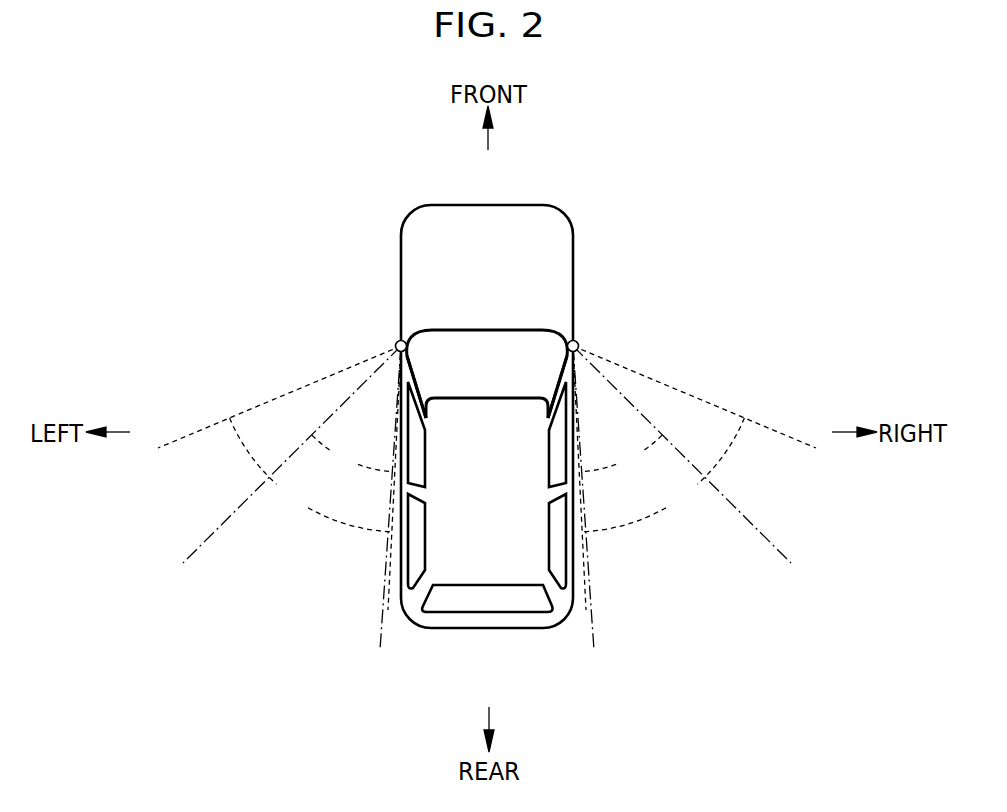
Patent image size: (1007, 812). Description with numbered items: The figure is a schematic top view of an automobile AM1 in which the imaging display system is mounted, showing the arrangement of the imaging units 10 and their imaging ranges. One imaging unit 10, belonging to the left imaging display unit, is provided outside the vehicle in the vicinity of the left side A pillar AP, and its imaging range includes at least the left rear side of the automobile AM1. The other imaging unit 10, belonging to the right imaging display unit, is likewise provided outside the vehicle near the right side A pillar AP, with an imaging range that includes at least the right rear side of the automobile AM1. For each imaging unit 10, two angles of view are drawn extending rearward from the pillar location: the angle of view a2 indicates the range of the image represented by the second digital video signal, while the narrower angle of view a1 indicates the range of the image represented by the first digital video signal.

The imaging unit 10 is at (397, 341).
The automobile AM1 is at (560, 190).
The A pillar AP is at (426, 415).
The angle of view a1 is at (487, 498).
The angle of view a2 is at (487, 478).